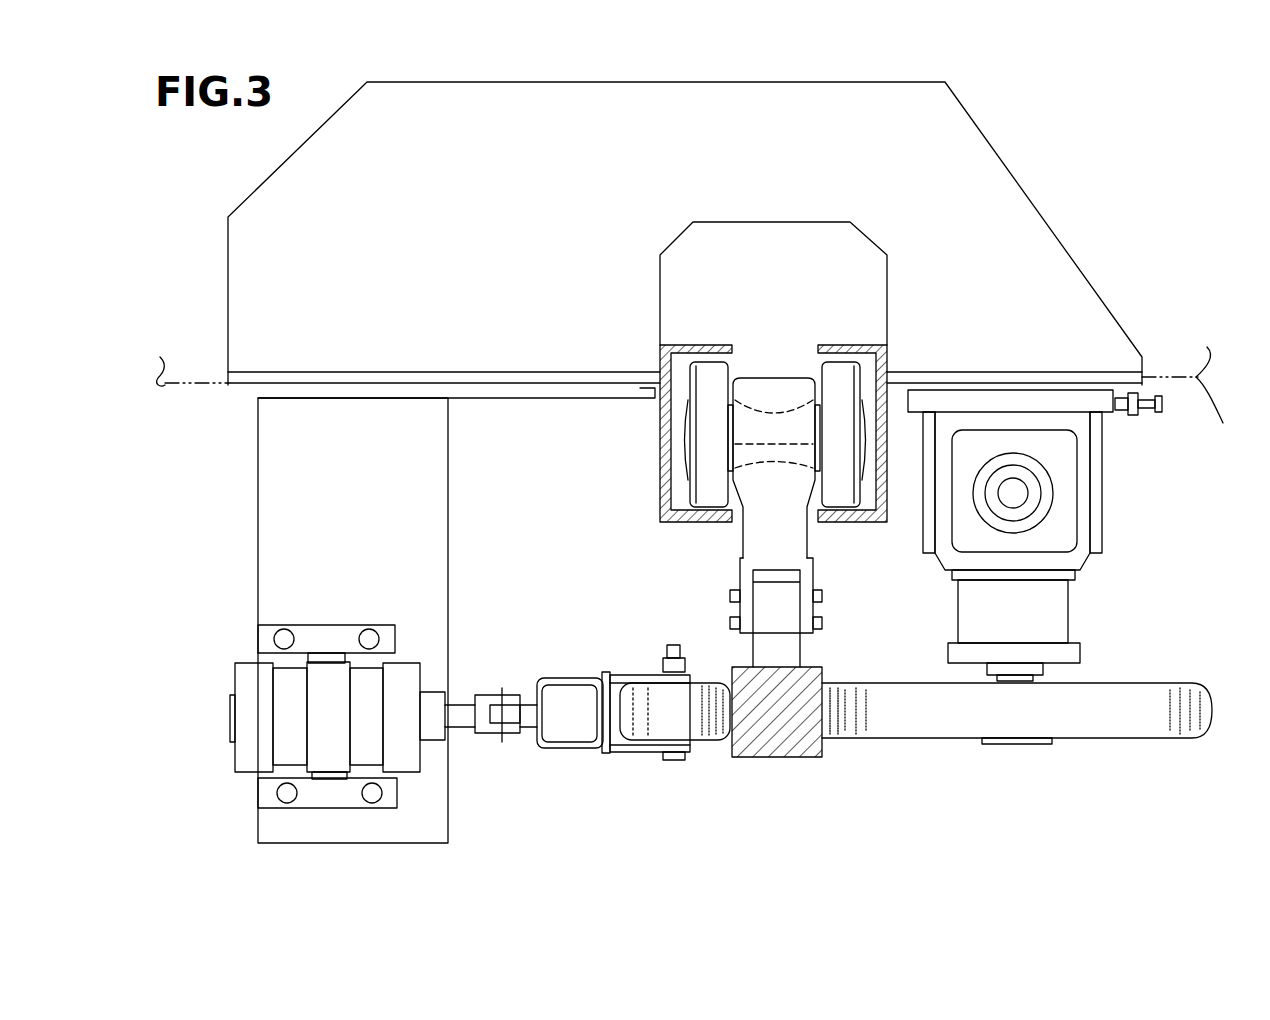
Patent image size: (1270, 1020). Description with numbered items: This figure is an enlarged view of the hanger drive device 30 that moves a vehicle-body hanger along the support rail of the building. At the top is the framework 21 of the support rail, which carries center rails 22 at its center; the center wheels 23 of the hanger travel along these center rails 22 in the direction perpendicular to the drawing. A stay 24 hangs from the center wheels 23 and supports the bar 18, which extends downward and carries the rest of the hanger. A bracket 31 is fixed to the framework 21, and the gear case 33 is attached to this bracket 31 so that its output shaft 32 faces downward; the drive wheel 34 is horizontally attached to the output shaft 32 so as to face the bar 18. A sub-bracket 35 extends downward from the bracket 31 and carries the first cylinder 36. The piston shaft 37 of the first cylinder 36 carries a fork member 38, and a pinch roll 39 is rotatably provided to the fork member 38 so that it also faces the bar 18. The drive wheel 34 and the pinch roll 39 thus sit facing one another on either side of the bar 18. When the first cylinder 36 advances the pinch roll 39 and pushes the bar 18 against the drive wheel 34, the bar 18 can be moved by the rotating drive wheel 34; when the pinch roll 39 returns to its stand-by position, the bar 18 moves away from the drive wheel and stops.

The bar 18 is at (775, 757).
The framework 21 is at (701, 402).
The center rails 22 is at (662, 458).
The center wheels 23 is at (705, 376).
The stay 24 is at (740, 540).
The hanger drive device 30 is at (888, 797).
The bracket 31 is at (1015, 206).
The output shaft 32 is at (1038, 678).
The gear case 33 is at (1082, 498).
The drive wheel 34 is at (1113, 738).
The sub-bracket 35 is at (285, 516).
The first cylinder 36 is at (245, 717).
The piston shaft 37 is at (465, 730).
The fork member 38 is at (627, 752).
The pinch roll 39 is at (710, 740).